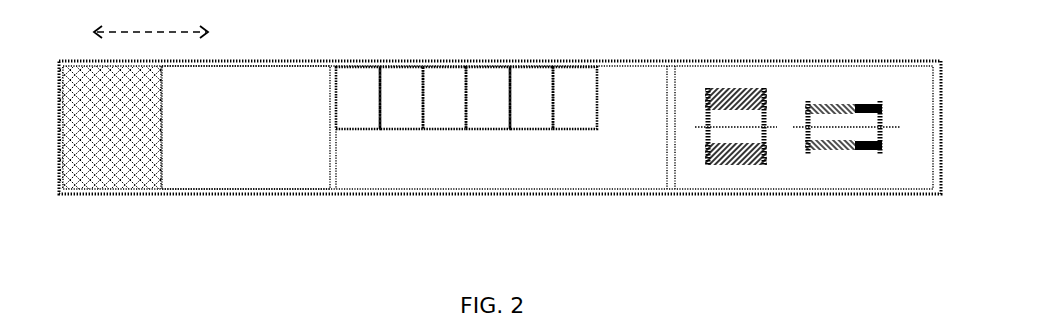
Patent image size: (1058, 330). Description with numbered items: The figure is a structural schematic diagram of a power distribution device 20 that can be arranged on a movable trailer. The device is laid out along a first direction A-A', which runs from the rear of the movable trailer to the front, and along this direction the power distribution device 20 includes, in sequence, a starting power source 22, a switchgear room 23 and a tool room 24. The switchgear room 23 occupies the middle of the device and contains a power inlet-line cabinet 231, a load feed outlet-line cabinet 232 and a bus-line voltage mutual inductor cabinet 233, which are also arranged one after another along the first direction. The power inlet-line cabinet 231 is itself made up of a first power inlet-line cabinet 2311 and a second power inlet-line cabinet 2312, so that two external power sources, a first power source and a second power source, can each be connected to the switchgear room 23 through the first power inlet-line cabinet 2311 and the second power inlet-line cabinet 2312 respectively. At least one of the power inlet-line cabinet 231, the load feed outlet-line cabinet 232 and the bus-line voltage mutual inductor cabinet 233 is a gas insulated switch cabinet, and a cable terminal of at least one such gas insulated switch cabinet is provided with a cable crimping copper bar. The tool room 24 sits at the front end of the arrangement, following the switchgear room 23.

The power distribution device 20 is at (500, 123).
The starting power source 22 is at (282, 88).
The switchgear room 23 is at (467, 64).
The power inlet-line cabinet 231 is at (392, 64).
The first power inlet-line cabinet 2311 is at (371, 72).
The second power inlet-line cabinet 2312 is at (412, 72).
The load feed outlet-line cabinet 232 is at (493, 75).
The bus-line voltage mutual inductor cabinet 233 is at (583, 82).
The tool room 24 is at (798, 88).